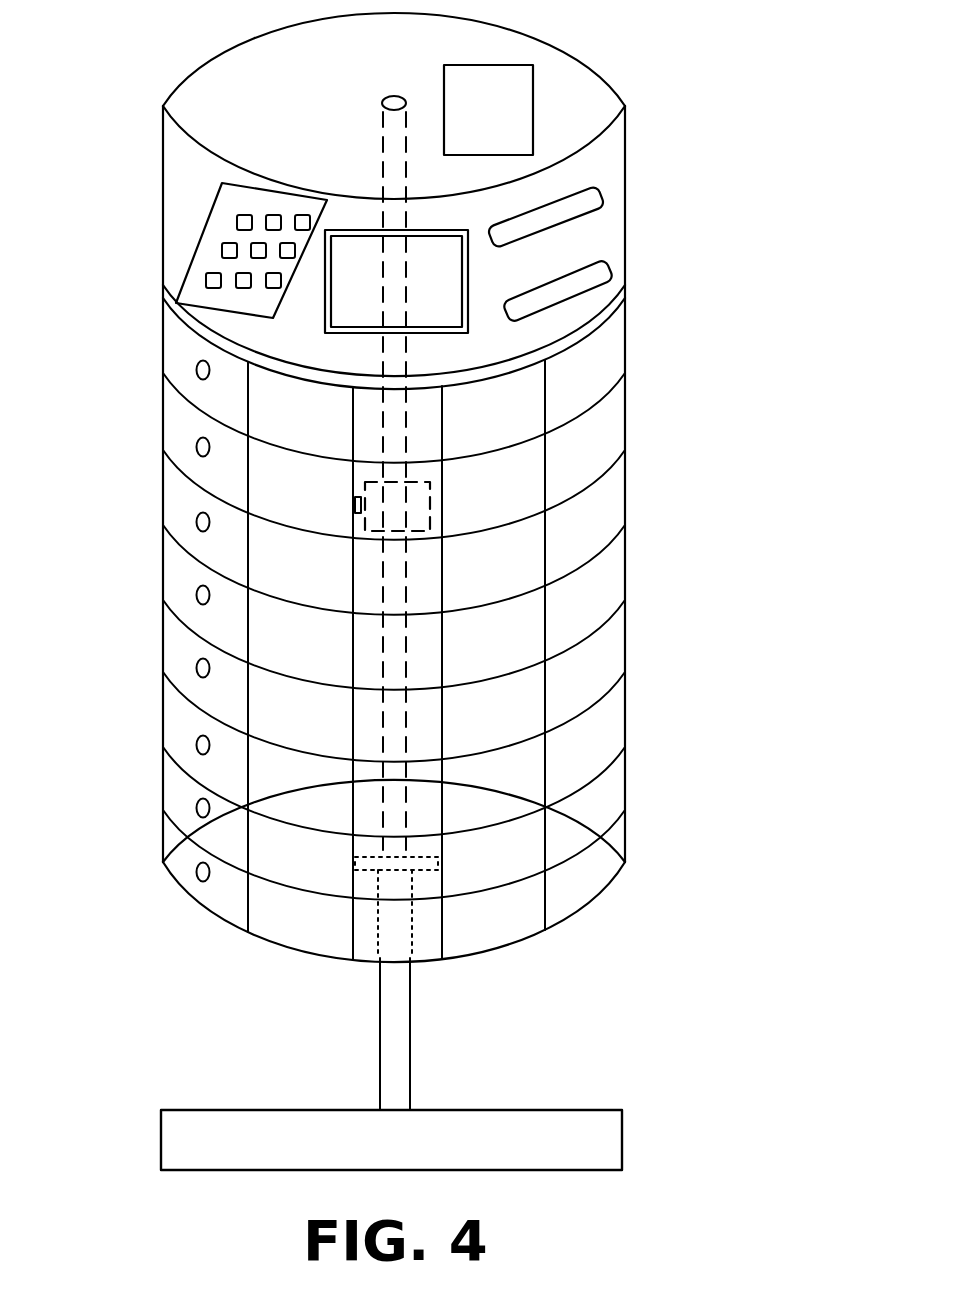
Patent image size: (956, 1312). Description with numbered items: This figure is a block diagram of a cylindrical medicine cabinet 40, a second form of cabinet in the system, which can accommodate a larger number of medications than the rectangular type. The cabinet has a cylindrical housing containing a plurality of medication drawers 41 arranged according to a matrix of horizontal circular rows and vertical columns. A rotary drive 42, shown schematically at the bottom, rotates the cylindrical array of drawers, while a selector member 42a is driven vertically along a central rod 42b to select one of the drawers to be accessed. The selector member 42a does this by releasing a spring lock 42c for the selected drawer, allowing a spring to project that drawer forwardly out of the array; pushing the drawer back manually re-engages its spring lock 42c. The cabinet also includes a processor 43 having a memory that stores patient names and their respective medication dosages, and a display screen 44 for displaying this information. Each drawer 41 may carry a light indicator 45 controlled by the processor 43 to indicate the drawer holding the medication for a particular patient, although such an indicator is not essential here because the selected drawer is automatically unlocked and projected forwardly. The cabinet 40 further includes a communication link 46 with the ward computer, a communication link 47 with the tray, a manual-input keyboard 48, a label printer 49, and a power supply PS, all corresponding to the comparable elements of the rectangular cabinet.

The cylindrical medicine cabinet 40 is at (640, 612).
The medication drawers 41 is at (188, 657).
The rotary drive 42 is at (371, 873).
The selector member 42a is at (388, 96).
The central rod 42b is at (412, 655).
The spring lock 42c is at (355, 505).
The processor 43 is at (205, 1140).
The display screen 44 is at (415, 260).
The light indicator 45 is at (197, 806).
The communication link 46 is at (582, 190).
The communication link 47 is at (600, 277).
The manual-input keyboard 48 is at (211, 268).
The label printer 49 is at (492, 76).
The power supply PS is at (573, 1142).